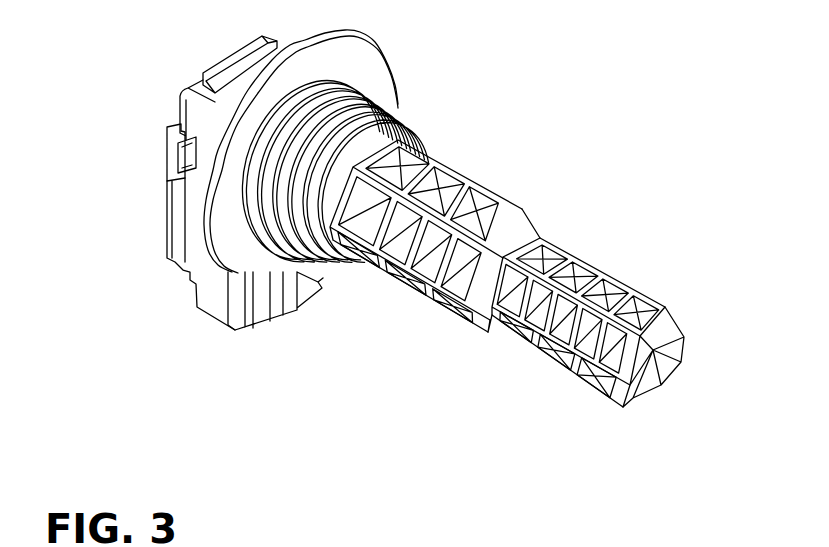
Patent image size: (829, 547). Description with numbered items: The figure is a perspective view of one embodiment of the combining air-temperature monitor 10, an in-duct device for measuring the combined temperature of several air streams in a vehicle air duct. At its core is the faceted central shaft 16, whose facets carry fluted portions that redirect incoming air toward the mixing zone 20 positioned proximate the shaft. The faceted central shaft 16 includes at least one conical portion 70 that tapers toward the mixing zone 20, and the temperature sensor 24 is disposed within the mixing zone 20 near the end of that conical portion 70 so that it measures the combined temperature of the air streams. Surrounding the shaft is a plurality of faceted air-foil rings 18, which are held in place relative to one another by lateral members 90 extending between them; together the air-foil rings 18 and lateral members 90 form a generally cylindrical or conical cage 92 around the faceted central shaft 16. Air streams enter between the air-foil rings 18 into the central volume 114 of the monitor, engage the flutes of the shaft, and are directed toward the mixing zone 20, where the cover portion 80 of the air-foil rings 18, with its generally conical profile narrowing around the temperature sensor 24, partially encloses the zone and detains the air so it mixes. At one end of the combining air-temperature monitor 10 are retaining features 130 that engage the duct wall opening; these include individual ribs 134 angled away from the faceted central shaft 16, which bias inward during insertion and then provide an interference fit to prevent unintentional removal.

The combining air-temperature monitor 10 is at (548, 63).
The faceted central shaft 16 is at (490, 185).
The air-foil rings 18 is at (587, 258).
The mixing zone 20 is at (470, 285).
The temperature sensor 24 is at (507, 237).
The conical portion 70 is at (324, 538).
The cover portion 80 is at (405, 328).
The lateral members 90 is at (445, 166).
The cage 92 is at (372, 293).
The central volume 114 is at (540, 337).
The retaining features 130 is at (412, 96).
The ribs 134 is at (267, 209).